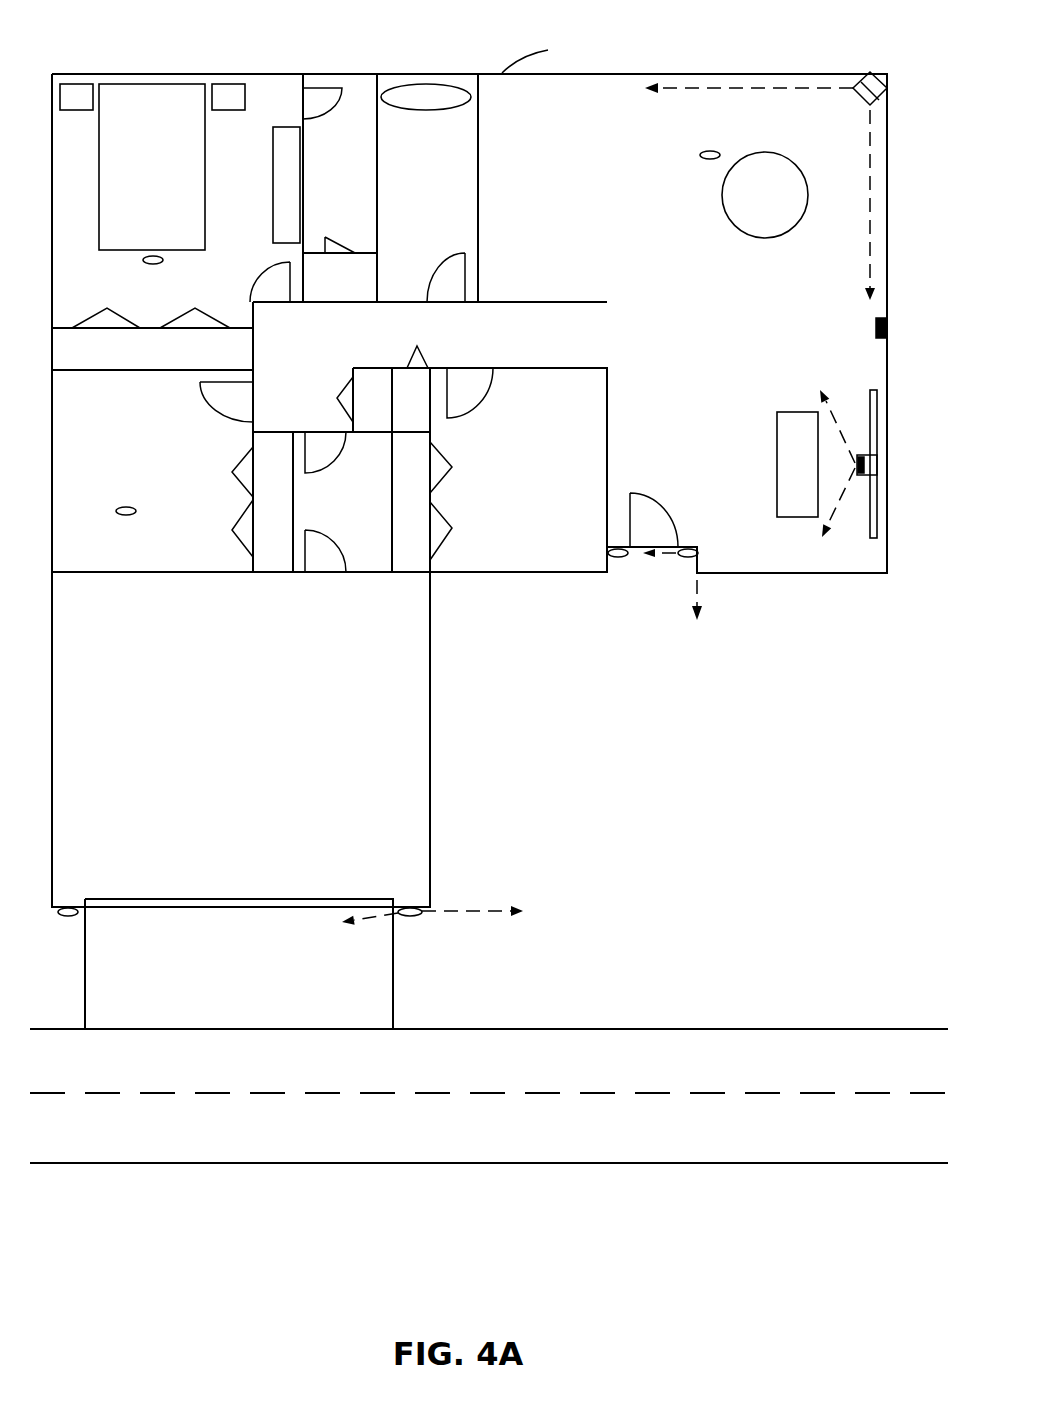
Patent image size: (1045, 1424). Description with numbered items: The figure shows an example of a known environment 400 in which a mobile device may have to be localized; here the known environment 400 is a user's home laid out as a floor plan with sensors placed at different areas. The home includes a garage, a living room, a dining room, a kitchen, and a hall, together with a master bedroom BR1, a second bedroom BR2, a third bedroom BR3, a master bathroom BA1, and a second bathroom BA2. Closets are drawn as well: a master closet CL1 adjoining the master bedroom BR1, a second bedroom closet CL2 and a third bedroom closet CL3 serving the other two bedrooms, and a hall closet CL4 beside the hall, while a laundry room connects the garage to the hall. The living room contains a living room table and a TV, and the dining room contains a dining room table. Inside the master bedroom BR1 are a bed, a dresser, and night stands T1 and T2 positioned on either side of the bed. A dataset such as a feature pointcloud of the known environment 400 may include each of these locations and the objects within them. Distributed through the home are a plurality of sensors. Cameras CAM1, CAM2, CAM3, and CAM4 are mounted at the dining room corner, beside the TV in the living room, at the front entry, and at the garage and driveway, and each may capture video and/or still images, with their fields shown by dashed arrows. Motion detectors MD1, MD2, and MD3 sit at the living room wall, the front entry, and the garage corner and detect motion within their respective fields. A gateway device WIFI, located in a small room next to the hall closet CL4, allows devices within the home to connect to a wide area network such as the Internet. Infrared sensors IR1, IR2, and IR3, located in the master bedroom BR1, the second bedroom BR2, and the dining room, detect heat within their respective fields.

The known environment 400 is at (788, 52).
The night stand T1 is at (76, 97).
The night stand T2 is at (228, 97).
The infrared sensor IR1 is at (153, 264).
The infrared sensor IR2 is at (127, 515).
The infrared sensor IR3 is at (710, 159).
The camera CAM1 is at (860, 100).
The camera CAM2 is at (867, 477).
The camera CAM3 is at (686, 557).
The camera CAM4 is at (414, 915).
The motion detector MD1 is at (873, 330).
The motion detector MD2 is at (620, 557).
The motion detector MD3 is at (66, 916).
The element TV is at (870, 398).
The gateway device WIFI is at (411, 389).
The master bedroom BR1 is at (177, 201).
The second bedroom BR2 is at (152, 471).
The third bedroom BR3 is at (518, 470).
The master bathroom BA1 is at (340, 188).
The second bathroom BA2 is at (427, 188).
The master closet CL1 is at (152, 339).
The second bedroom closet CL2 is at (273, 502).
The third bedroom closet CL3 is at (422, 502).
The hall closet CL4 is at (364, 400).